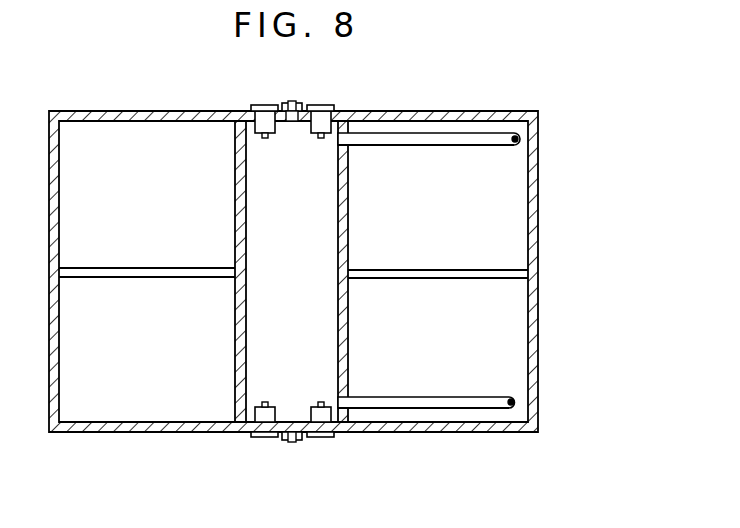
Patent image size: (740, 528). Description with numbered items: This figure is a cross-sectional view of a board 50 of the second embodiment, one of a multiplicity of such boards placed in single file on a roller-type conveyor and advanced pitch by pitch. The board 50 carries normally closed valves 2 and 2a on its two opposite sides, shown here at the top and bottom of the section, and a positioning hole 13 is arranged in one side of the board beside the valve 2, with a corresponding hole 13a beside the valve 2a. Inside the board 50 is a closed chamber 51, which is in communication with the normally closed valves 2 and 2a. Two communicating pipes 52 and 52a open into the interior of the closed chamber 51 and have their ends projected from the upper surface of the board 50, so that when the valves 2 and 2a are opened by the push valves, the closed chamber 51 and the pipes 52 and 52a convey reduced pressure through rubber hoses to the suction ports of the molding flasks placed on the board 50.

The board 50 is at (538, 213).
The closed chamber 51 is at (257, 358).
The communicating pipe 52 is at (485, 147).
The communicating pipe 52a is at (482, 406).
The normally closed valve 2 is at (260, 104).
The positioning hole 13 is at (292, 102).
The normally closed valve 2a is at (262, 437).
The lower connector 13a is at (292, 442).